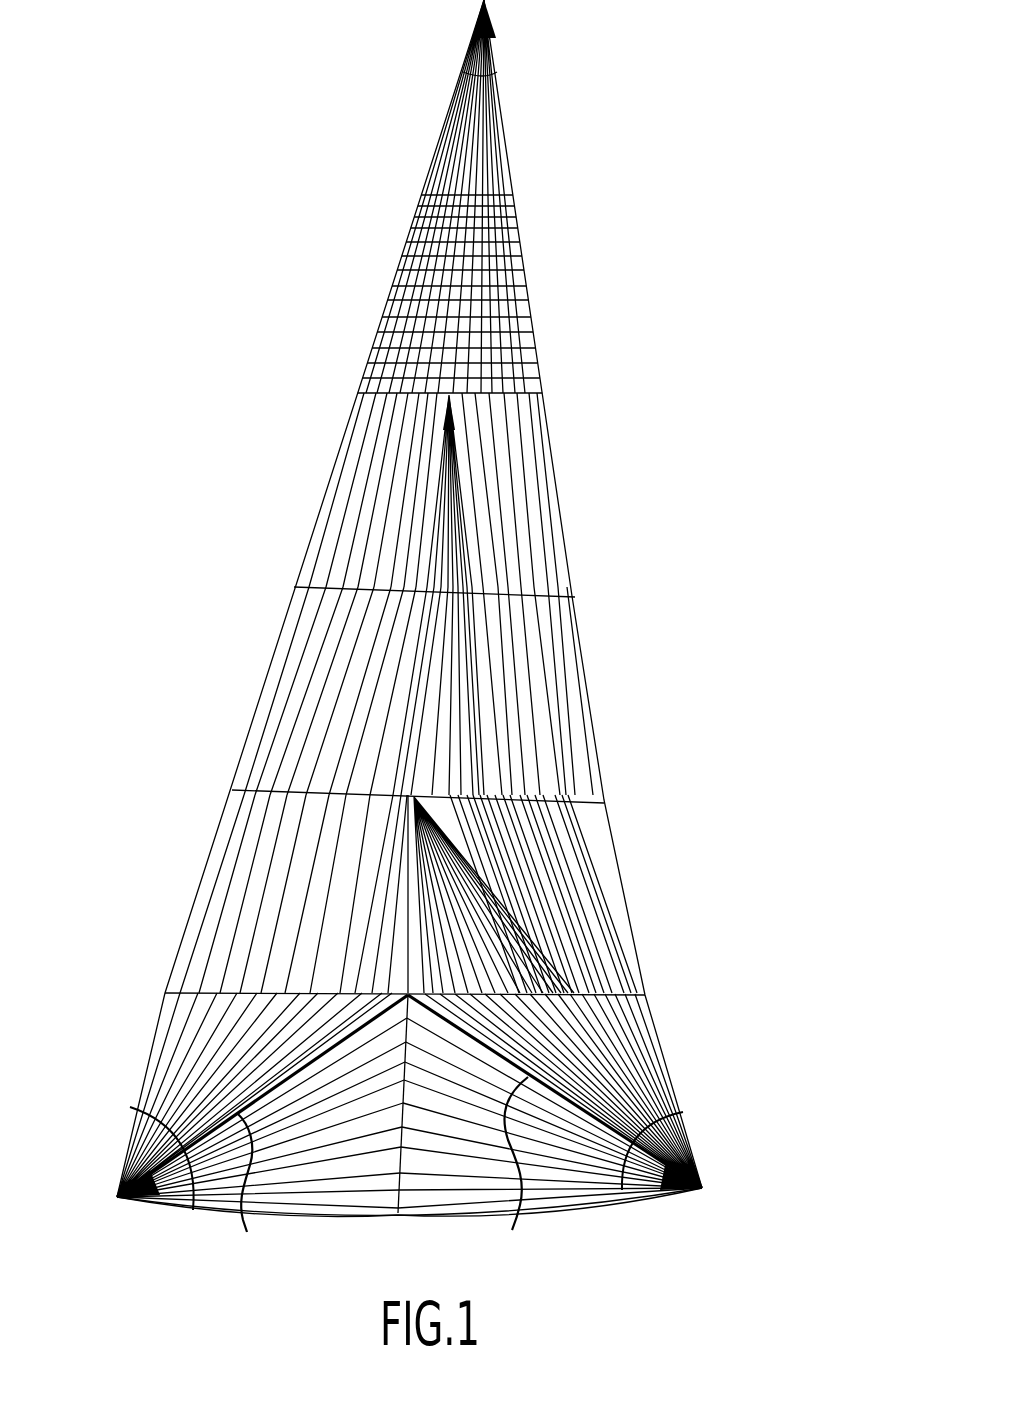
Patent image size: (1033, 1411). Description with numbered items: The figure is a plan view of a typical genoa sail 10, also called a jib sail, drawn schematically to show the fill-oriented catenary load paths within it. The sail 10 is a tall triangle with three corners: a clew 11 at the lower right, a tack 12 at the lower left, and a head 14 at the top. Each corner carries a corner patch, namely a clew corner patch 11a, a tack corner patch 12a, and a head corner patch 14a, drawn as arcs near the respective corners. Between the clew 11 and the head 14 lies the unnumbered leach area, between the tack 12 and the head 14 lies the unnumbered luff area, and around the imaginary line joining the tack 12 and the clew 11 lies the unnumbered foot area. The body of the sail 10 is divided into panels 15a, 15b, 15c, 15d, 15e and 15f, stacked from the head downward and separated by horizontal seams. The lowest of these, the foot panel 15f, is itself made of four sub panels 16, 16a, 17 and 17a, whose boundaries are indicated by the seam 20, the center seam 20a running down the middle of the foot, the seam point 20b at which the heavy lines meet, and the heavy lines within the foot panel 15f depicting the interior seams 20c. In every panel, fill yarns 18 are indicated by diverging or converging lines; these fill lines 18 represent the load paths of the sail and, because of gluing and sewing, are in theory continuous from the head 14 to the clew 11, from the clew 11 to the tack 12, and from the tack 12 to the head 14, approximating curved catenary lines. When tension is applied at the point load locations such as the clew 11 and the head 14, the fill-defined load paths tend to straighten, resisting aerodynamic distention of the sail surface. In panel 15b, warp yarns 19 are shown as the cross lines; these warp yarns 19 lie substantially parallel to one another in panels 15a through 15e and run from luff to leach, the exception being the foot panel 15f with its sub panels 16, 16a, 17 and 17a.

The genoa sail 10 is at (176, 641).
The clew 11 is at (706, 1188).
The clew corner patch 11a is at (683, 1112).
The tack 12 is at (112, 1196).
The tack corner patch 12a is at (141, 1108).
The head 14 is at (497, 22).
The head corner patch 14a is at (463, 74).
The panel 15a is at (504, 116).
The panel 15b is at (508, 286).
The panel 15c is at (588, 539).
The panel 15d is at (608, 706).
The panel 15e is at (630, 856).
The foot panel 15f is at (704, 1133).
The sub panel 16 is at (142, 1033).
The sub panel 16a is at (200, 1211).
The sub panel 17 is at (658, 1038).
The sub panel 17a is at (606, 1207).
The fill yarns 18 is at (507, 183).
The warp yarns 19 is at (533, 368).
The seam 20 is at (602, 786).
The center seam 20a is at (399, 1215).
The seam point 20b is at (409, 996).
The interior seams 20c is at (382, 1174).